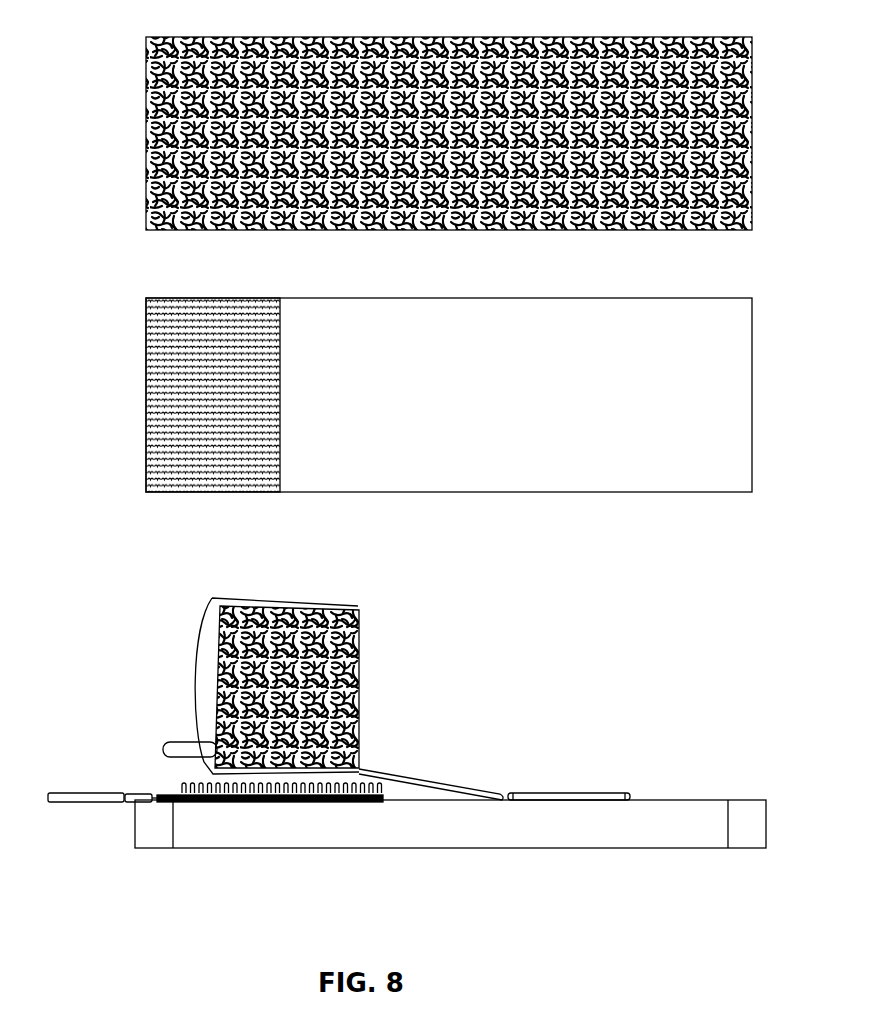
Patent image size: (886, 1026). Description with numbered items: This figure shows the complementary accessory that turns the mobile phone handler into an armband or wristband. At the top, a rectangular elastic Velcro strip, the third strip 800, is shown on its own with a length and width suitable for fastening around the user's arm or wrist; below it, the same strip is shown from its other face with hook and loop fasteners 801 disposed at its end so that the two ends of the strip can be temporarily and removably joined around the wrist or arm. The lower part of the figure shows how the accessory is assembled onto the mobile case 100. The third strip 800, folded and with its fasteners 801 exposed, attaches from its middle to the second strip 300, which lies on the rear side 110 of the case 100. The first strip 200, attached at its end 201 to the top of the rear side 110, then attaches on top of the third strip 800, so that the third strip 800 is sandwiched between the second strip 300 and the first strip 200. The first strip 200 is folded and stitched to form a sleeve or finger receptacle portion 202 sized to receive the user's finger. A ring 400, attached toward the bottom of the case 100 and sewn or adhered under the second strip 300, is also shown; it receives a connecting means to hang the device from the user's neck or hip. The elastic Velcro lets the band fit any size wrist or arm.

The mobile case 100 is at (697, 669).
The rear side 110 is at (688, 800).
The first strip 200 is at (418, 778).
The end of first strip 201 is at (553, 795).
The sleeve or finger receptacle portion 202 is at (172, 744).
The second strip 300 is at (260, 803).
The ring 400 is at (77, 803).
The third strip 800 is at (146, 71).
The hook and loop fasteners 801 is at (158, 335).